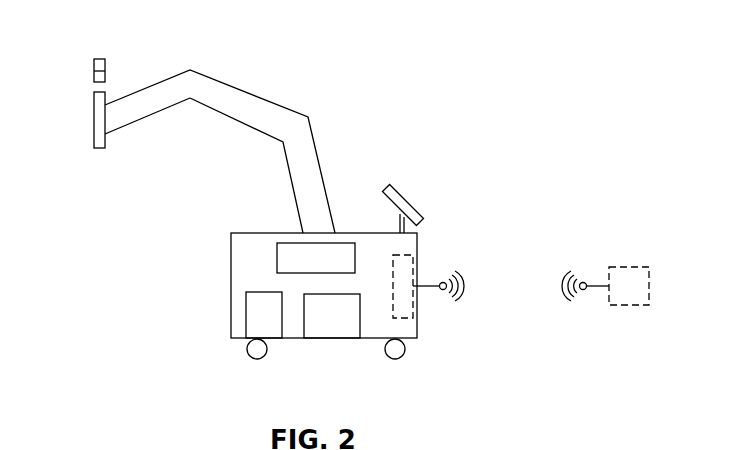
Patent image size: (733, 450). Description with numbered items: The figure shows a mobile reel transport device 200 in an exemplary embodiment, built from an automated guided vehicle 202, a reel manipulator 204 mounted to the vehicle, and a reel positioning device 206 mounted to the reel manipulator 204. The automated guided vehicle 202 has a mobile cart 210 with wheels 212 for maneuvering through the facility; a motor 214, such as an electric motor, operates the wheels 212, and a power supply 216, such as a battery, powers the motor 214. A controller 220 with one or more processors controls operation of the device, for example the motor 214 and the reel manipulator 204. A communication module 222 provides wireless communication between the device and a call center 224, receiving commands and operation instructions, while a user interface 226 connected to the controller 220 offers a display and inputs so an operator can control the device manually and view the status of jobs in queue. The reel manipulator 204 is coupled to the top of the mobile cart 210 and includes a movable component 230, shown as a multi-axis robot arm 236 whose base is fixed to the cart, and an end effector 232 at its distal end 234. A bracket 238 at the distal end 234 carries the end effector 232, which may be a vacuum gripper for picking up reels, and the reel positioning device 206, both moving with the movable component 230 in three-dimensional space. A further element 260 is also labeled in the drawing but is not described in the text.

The mobile reel transport device 200 is at (382, 94).
The automated guided vehicle 202 is at (168, 290).
The reel manipulator 204 is at (266, 80).
The reel positioning device 206 is at (84, 65).
The mobile cart 210 is at (417, 325).
The wheels 212 is at (405, 353).
The motor 214 is at (246, 317).
The power supply 216 is at (362, 312).
The controller 220 is at (345, 242).
The communication module 222 is at (403, 252).
The call center 224 is at (628, 267).
The user interface 226 is at (423, 199).
The movable component 230 is at (286, 105).
The end effector 232 is at (92, 120).
The distal end 234 is at (108, 136).
The multi-axis robot arm 236 is at (158, 78).
The bracket 238 is at (108, 88).
The object 260 is at (75, 440).